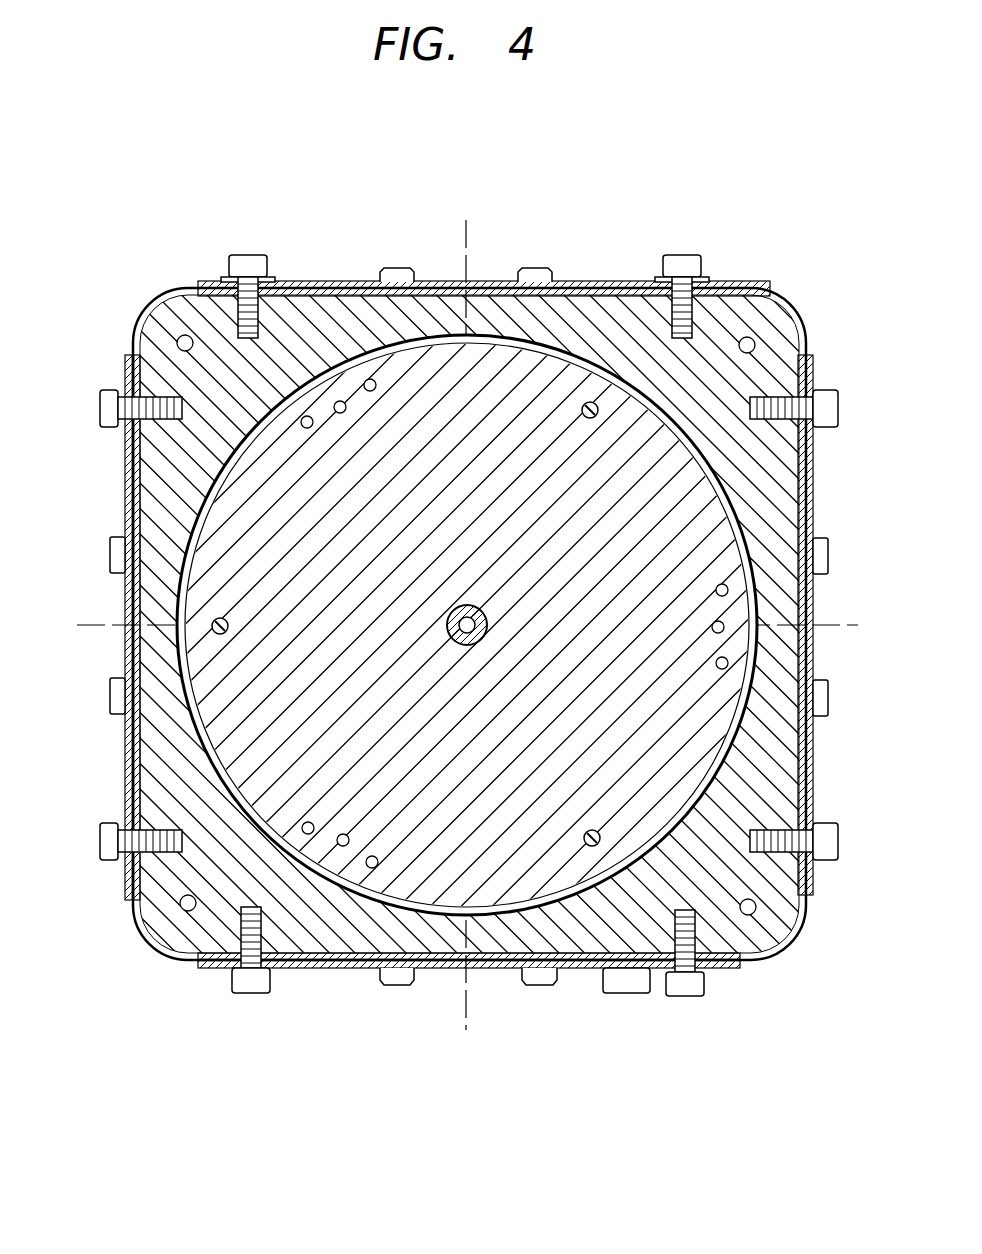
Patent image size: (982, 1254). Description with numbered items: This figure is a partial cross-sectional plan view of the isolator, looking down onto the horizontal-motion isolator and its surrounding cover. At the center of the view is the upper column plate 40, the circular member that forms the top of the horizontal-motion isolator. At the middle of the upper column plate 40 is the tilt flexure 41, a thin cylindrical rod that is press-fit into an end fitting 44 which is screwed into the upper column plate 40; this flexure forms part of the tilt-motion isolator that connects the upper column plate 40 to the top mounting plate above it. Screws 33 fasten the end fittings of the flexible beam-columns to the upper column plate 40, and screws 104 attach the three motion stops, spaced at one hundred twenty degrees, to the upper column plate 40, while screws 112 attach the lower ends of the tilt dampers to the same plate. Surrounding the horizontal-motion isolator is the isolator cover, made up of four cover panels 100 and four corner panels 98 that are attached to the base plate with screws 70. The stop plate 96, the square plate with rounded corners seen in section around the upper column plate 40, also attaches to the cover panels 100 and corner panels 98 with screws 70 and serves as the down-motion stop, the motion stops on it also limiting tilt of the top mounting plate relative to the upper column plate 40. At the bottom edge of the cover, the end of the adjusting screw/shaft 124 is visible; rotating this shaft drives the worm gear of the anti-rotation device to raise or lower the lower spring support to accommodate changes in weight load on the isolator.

The screws 33 is at (585, 418).
The upper column plate 40 is at (713, 700).
The tilt flexure 41 is at (464, 607).
The end fitting 44 is at (483, 632).
The screws 70 is at (248, 255).
The stop plate 96 is at (765, 322).
The corner panels 98 is at (160, 958).
The cover panels 100 is at (347, 968).
The screws 104 is at (376, 389).
The screws 112 is at (342, 413).
The adjusting screw/shaft 124 is at (628, 993).